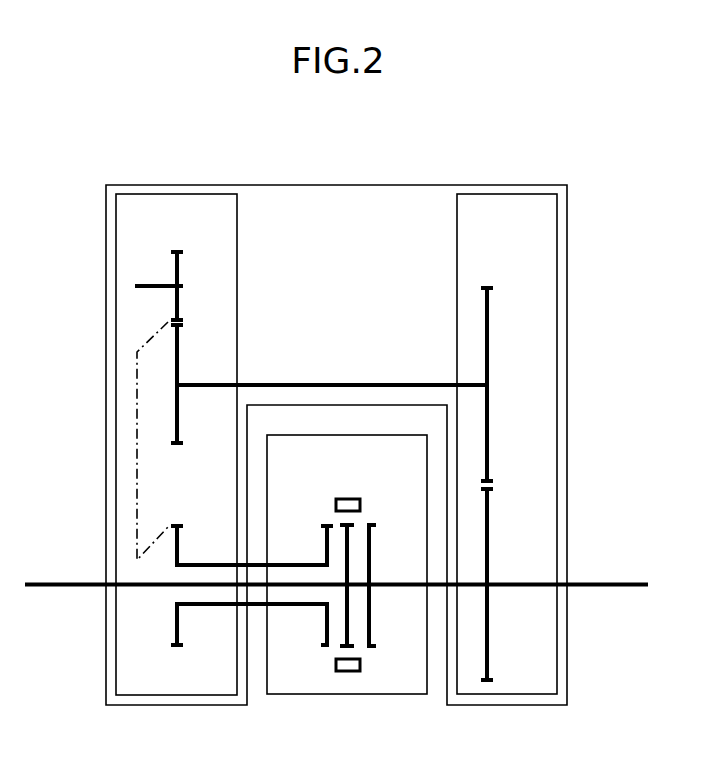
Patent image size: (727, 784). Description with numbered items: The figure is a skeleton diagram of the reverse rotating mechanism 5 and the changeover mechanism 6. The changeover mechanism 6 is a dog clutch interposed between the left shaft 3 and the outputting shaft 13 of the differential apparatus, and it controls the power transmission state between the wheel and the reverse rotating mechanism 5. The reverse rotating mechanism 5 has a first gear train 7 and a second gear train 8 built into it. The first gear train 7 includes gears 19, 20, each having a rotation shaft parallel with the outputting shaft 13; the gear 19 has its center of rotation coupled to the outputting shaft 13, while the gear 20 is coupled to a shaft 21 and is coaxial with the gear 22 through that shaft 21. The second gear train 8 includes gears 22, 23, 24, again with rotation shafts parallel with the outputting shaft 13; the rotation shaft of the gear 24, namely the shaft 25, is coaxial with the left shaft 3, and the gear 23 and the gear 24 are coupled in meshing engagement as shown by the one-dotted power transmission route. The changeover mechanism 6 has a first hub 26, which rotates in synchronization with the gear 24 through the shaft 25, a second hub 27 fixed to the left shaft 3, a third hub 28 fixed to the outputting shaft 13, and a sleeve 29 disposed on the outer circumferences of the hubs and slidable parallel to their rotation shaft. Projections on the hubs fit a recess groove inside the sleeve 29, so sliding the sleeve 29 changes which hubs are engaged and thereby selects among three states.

The left shaft 3 is at (68, 582).
The reverse rotating mechanism 5 is at (376, 184).
The changeover mechanism 6 is at (347, 695).
The first gear train 7 is at (511, 193).
The second gear train 8 is at (181, 193).
The outputting shaft 13 is at (606, 582).
The gear 19 is at (494, 538).
The gear 20 is at (494, 338).
The shaft 21 is at (336, 382).
The gear 22 is at (184, 353).
The gear 23 is at (184, 268).
The gear 24 is at (174, 625).
The shaft 25 is at (208, 562).
The first hub 26 is at (323, 625).
The second hub 27 is at (351, 620).
The third hub 28 is at (375, 553).
The sleeve 29 is at (345, 496).